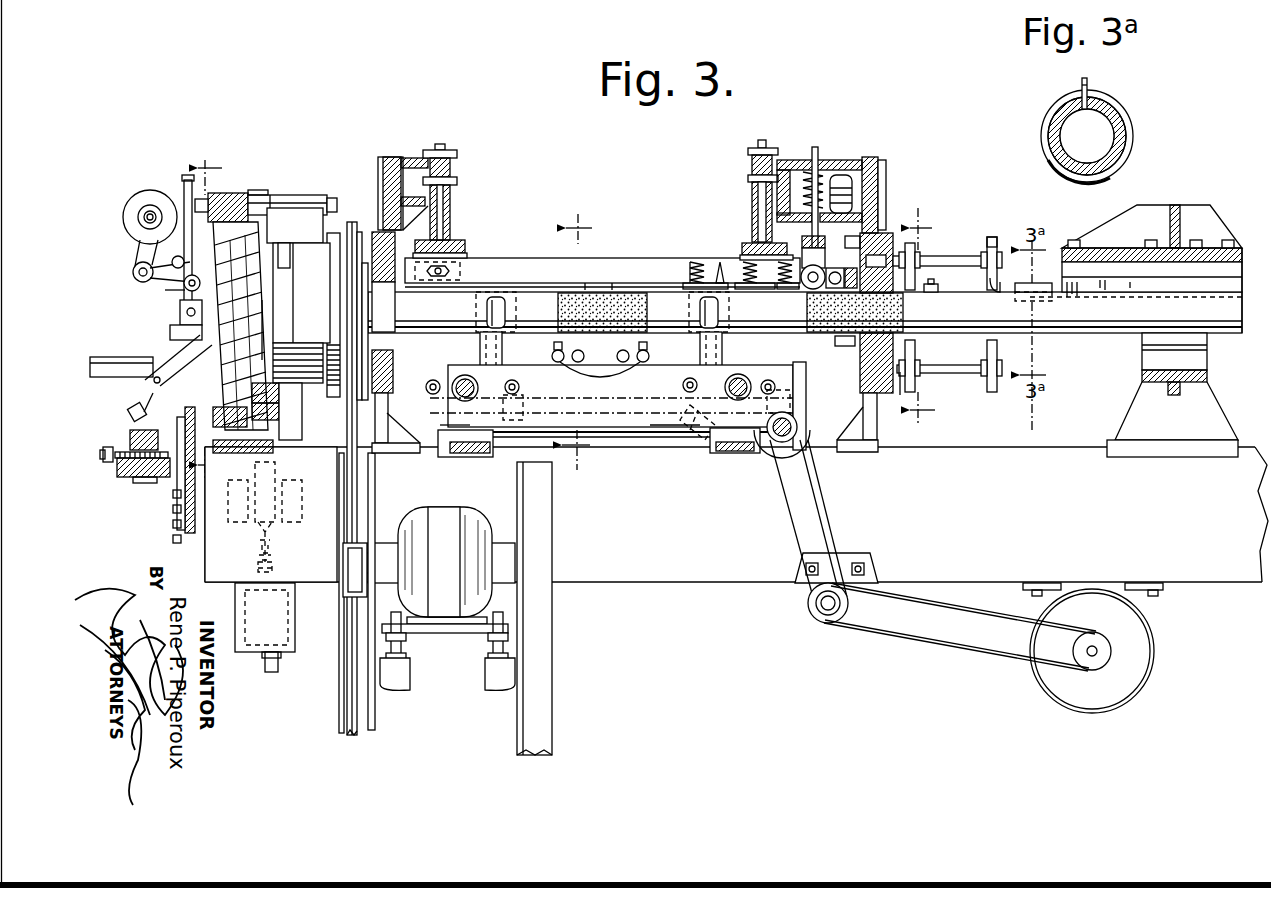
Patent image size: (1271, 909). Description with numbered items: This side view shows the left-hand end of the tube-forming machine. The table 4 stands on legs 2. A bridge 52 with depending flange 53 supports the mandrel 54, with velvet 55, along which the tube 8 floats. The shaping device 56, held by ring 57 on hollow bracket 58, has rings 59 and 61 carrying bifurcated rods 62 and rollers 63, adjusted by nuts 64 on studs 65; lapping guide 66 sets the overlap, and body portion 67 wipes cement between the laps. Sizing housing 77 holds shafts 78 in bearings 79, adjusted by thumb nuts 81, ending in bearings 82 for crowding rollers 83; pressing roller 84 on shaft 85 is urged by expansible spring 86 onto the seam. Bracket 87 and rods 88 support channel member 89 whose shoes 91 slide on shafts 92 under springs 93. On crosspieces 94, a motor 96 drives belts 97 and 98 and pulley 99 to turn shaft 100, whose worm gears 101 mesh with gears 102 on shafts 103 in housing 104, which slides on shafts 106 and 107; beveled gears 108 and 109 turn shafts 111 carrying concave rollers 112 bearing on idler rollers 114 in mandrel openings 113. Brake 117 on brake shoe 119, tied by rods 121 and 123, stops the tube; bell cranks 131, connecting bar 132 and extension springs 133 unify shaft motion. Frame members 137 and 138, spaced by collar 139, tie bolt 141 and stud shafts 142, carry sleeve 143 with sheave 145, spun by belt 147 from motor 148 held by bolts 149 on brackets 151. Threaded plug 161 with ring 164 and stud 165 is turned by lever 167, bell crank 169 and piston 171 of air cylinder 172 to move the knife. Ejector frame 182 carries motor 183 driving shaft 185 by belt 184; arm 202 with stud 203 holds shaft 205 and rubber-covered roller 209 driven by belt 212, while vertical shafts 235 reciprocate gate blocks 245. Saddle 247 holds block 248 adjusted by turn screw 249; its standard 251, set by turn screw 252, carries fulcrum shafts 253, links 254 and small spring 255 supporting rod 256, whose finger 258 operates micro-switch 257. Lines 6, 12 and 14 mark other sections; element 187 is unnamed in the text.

In FIG. 3, the legs 2 is at (515, 710).
In FIG. 3, the table 4 is at (1214, 583).
In FIG. 3, the section line 6 is at (581, 344).
In FIG. 3A, the tube 8 is at (1118, 106).
In FIG. 3, the section line 12 is at (942, 316).
In FIG. 3, the section line 14 is at (226, 316).
In FIG. 3, the bridge 52 is at (1180, 225).
In FIG. 3, the depending flange 53 is at (1165, 284).
In FIG. 3, the mandrel 54 is at (1226, 320).
In FIG. 3A, the mandrel 54 is at (1124, 112).
In FIG. 3, the velvet covering 55 is at (562, 298).
In FIG. 3, the shaping device 56 is at (958, 257).
In FIG. 3, the ring 57 is at (878, 240).
In FIG. 3, the hollow bracket 58 is at (878, 170).
In FIG. 3, the ring 59 is at (1000, 252).
In FIG. 3, the ring 61 is at (918, 262).
In FIG. 3, the bifurcated rods 62 is at (992, 240).
In FIG. 3, the rollers 63 is at (988, 282).
In FIG. 3, the nuts 64 is at (925, 362).
In FIG. 3, the studs 65 is at (975, 412).
In FIG. 3, the lapping guide 66 is at (1038, 288).
In FIG. 3A, the lapping guide 66 is at (1090, 91).
In FIG. 3, the body portion 67 is at (938, 288).
In FIG. 3, the housing 77 is at (827, 147).
In FIG. 3, the shafts 78 is at (812, 245).
In FIG. 3, the bearings 79 is at (862, 197).
In FIG. 3, the thumb nuts 81 is at (845, 172).
In FIG. 3, the bearing 82 is at (827, 313).
In FIG. 3, the concave crowding rollers 83 is at (843, 333).
In FIG. 3, the roller 84 is at (800, 290).
In FIG. 3, the shaft 85 is at (816, 230).
In FIG. 3, the expansible spring 86 is at (812, 165).
In FIG. 3, the second bracket 87 is at (385, 190).
In FIG. 3, the vertically adjustable rods 88 is at (442, 222).
In FIG. 3, the channel member 89 is at (600, 350).
In FIG. 3, the shoes 91 is at (712, 257).
In FIG. 3, the shaft 92 is at (695, 262).
In FIG. 3, the expansible spring 93 is at (680, 270).
In FIG. 3, the crosspieces 94 is at (475, 458).
In FIG. 3, the motor 96 is at (1100, 697).
In FIG. 3, the belt 97 is at (905, 640).
In FIG. 3, the belt 98 is at (838, 530).
In FIG. 3, the pulley 99 is at (787, 455).
In FIG. 3, the shaft 100 is at (776, 444).
In FIG. 3, the worm gears 101 is at (824, 455).
In FIG. 3, the gears 102 is at (808, 410).
In FIG. 3, the shafts 103 is at (638, 405).
In FIG. 3, the housing 104 is at (618, 478).
In FIG. 3, the shaft 106 is at (748, 378).
In FIG. 3, the shaft 107 is at (455, 378).
In FIG. 3, the beveled gears 108 is at (523, 398).
In FIG. 3, the beveled gears 109 is at (513, 378).
In FIG. 3, the shafts 111 is at (478, 348).
In FIG. 3, the rollers 112 is at (602, 296).
In FIG. 3, the openings 113 is at (503, 296).
In FIG. 3, the convex idler rollers 114 is at (486, 311).
In FIG. 3, the brake 117 is at (585, 274).
In FIG. 3, the brake shoe 119 is at (612, 275).
In FIG. 3, the rods 121 is at (583, 361).
In FIG. 3, the rods 123 is at (598, 372).
In FIG. 3, the bell cranks 131 is at (460, 420).
In FIG. 3, the connecting bar 132 is at (534, 448).
In FIG. 3, the extension springs 133 is at (660, 440).
In FIG. 3, the frame member 137 is at (242, 195).
In FIG. 3, the frame member 138 is at (300, 192).
In FIG. 3, the spacing collar 139 is at (278, 188).
In FIG. 3, the tie bolt 141 is at (222, 198).
In FIG. 3, the stud shafts 142 is at (105, 357).
In FIG. 3, the sleeve 143 is at (333, 295).
In FIG. 3, the sheave 145 is at (366, 225).
In FIG. 3, the belt 147 is at (352, 455).
In FIG. 3, the motor 148 is at (437, 512).
In FIG. 3, the bolts 149 is at (405, 648).
In FIG. 3, the brackets 151 is at (410, 680).
In FIG. 3, the plug 161 is at (258, 286).
In FIG. 3, the ring 164 is at (278, 232).
In FIG. 3, the stud 165 is at (280, 413).
In FIG. 3, the lever 167 is at (280, 396).
In FIG. 3, the bell crank 169 is at (280, 470).
In FIG. 3, the piston 171 is at (276, 552).
In FIG. 3, the air cylinder 172 is at (280, 617).
In FIG. 3, the frame 182 is at (188, 178).
In FIG. 3, the motor 183 is at (146, 192).
In FIG. 3, the belt 184 is at (135, 250).
In FIG. 3, the shaft 185 is at (133, 276).
In FIG. 3, the plate 187 is at (268, 258).
In FIG. 3, the arm 202 is at (168, 262).
In FIG. 3, the stud 203 is at (160, 280).
In FIG. 3, the shaft 205 is at (180, 318).
In FIG. 3, the rubber covered roller 209 is at (185, 290).
In FIG. 3, the belt 212 is at (170, 290).
In FIG. 3, the vertical shafts 235 is at (150, 380).
In FIG. 3, the block 245 is at (180, 338).
In FIG. 3, the saddle 247 is at (190, 533).
In FIG. 3, the block 248 is at (125, 478).
In FIG. 3, the turn screw 249 is at (172, 540).
In FIG. 3, the standard 251 is at (130, 438).
In FIG. 3, the turn screw 252 is at (106, 465).
In FIG. 3, the fulcrum shafts 253 is at (245, 340).
In FIG. 3, the link 254 is at (212, 428).
In FIG. 3, the small spring 255 is at (268, 355).
In FIG. 3, the rod 256 is at (133, 408).
In FIG. 3, the micro-switch 257 is at (143, 412).
In FIG. 3, the finger 258 is at (240, 330).